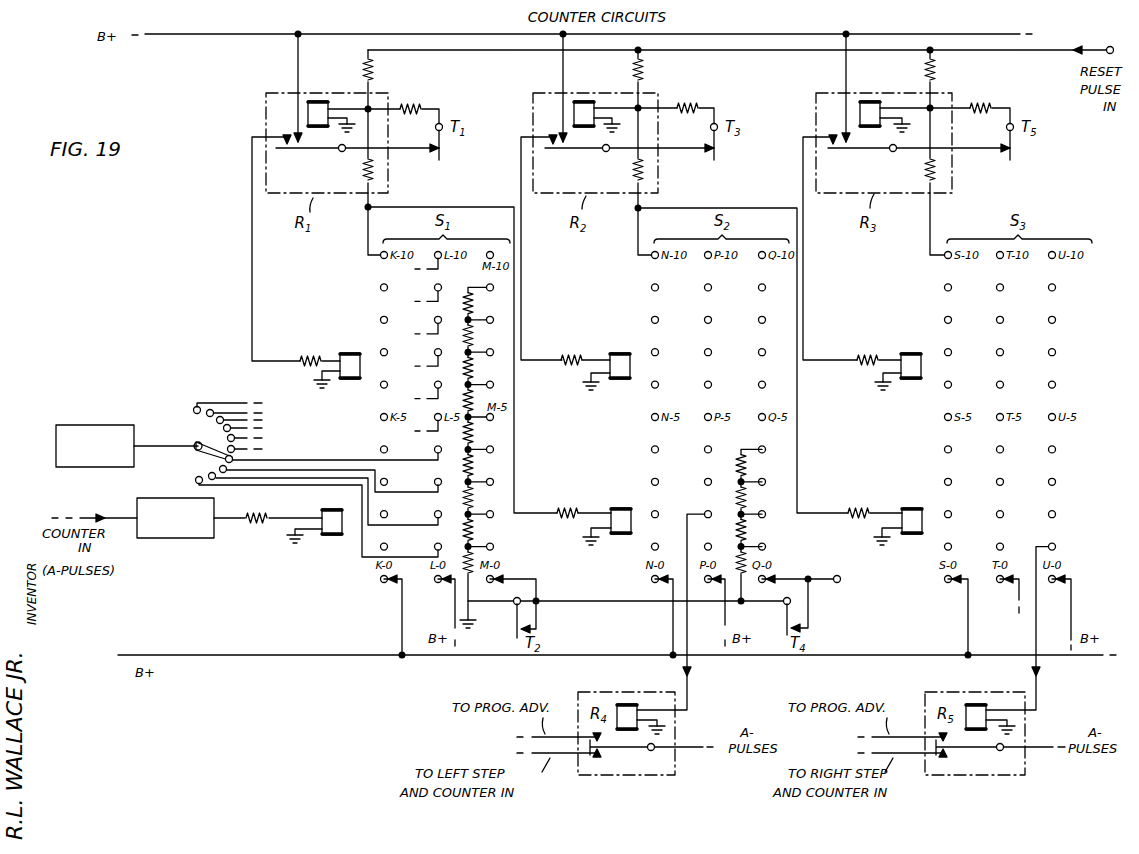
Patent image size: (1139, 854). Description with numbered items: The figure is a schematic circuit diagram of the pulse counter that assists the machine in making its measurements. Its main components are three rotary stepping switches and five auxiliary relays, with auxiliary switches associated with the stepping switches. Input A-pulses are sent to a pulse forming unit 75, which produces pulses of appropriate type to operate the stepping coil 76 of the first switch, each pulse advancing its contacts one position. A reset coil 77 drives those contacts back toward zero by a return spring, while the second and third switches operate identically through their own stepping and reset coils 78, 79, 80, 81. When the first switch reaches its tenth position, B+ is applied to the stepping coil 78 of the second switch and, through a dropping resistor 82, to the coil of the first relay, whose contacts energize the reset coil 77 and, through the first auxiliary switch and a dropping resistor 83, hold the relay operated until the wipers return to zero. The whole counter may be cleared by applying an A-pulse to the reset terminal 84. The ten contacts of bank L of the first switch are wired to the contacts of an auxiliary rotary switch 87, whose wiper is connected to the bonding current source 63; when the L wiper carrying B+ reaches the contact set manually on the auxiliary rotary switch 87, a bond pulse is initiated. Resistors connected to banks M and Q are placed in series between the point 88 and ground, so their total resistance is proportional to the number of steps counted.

The bonding current source 63 is at (96, 424).
The pulse forming unit 75 is at (196, 540).
The stepping coil 76 is at (329, 540).
The reset coil 77 is at (356, 352).
The stepping coil 78 is at (620, 538).
The reset coil 79 is at (622, 352).
The stepping coil 80 is at (912, 538).
The reset coil 81 is at (912, 352).
The dropping resistor 82 is at (357, 173).
The dropping resistor 83 is at (408, 102).
The reset terminal 84 is at (1111, 47).
The auxiliary rotary switch 87 is at (195, 430).
The point 88 is at (843, 585).